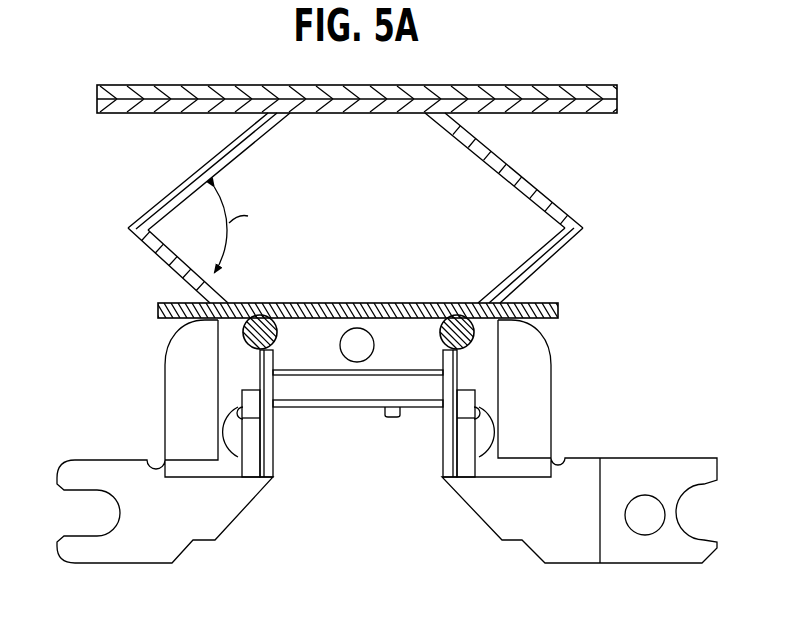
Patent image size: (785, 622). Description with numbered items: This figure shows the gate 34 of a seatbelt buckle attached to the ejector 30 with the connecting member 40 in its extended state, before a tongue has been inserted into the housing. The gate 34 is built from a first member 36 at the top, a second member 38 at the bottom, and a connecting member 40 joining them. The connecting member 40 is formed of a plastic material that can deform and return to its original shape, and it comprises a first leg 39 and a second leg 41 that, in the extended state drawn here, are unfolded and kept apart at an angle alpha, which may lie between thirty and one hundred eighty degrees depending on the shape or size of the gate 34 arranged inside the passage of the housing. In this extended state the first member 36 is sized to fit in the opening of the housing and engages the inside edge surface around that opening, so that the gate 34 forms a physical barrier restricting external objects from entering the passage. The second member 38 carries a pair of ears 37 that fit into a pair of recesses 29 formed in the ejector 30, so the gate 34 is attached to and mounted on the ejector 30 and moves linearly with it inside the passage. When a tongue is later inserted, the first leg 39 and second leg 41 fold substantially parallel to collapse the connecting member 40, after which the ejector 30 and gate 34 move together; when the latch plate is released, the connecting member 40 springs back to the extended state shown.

The recesses 29 is at (275, 344).
The ejector 30 is at (580, 478).
The gate 34 is at (368, 208).
The first member 36 is at (510, 85).
The ears 37 is at (455, 303).
The second member 38 is at (560, 305).
The first leg 39 is at (176, 189).
The connecting member 40 is at (578, 211).
The second leg 41 is at (164, 264).